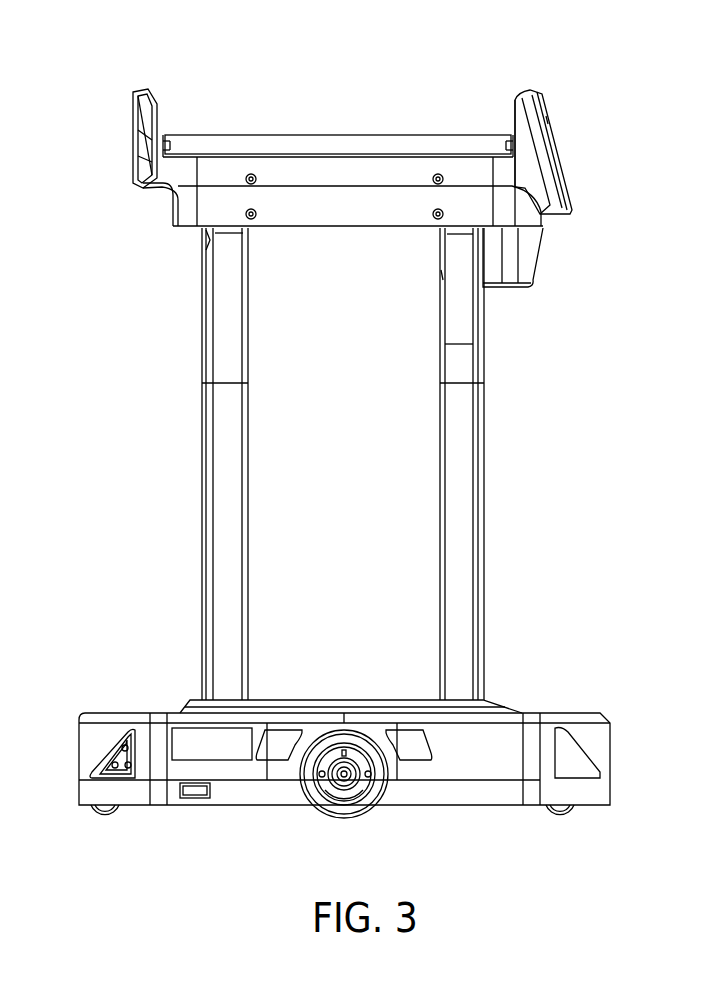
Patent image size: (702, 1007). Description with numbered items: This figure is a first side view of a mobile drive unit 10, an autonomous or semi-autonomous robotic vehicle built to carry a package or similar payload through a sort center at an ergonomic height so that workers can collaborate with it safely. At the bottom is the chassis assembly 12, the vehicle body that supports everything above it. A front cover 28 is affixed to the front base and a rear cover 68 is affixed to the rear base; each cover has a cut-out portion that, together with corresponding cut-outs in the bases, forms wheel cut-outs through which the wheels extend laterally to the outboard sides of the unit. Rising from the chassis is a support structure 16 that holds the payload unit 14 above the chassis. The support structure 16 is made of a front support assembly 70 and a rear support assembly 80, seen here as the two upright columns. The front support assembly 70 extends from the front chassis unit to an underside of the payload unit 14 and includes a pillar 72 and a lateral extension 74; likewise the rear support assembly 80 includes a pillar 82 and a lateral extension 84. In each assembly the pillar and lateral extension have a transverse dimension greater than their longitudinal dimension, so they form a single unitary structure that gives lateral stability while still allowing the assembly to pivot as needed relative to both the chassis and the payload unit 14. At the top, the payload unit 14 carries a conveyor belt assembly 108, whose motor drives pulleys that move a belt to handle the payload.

The mobile drive unit 10 is at (648, 64).
The chassis assembly 12 is at (610, 743).
The payload unit 14 is at (563, 146).
The support structure 16 is at (590, 690).
The front cover 28 is at (600, 713).
The rear cover 68 is at (95, 741).
The front support assembly 70 is at (468, 540).
The pillar 72 is at (447, 503).
The lateral extension 74 is at (447, 311).
The rear support assembly 80 is at (201, 452).
The pillar 82 is at (228, 482).
The lateral extension 84 is at (228, 283).
The conveyor belt assembly 108 is at (342, 145).